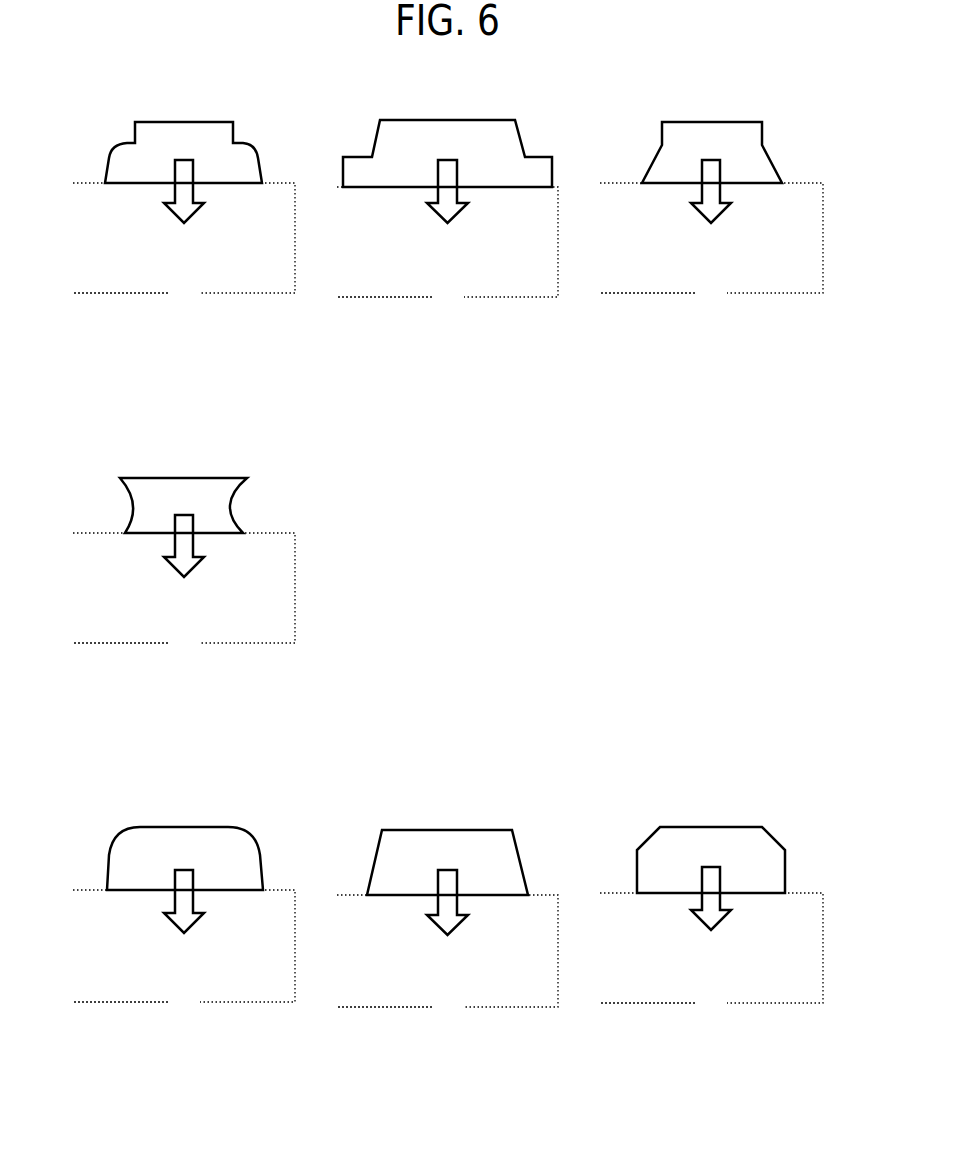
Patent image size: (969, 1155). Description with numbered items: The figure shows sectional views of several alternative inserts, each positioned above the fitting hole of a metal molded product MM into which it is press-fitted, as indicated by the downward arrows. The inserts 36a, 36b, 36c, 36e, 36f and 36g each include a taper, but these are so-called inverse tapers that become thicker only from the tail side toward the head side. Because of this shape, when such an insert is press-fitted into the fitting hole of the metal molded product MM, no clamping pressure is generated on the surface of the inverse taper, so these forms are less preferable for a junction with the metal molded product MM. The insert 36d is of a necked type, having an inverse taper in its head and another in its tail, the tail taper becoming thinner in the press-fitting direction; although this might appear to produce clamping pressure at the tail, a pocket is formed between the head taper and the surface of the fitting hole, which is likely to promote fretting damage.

The insert 36a is at (183, 127).
The insert 36b is at (448, 127).
The insert 36c is at (713, 127).
The insert 36d is at (183, 478).
The insert 36e is at (183, 825).
The insert 36f is at (450, 828).
The insert 36g is at (713, 822).
The metal molded product MM is at (103, 295).